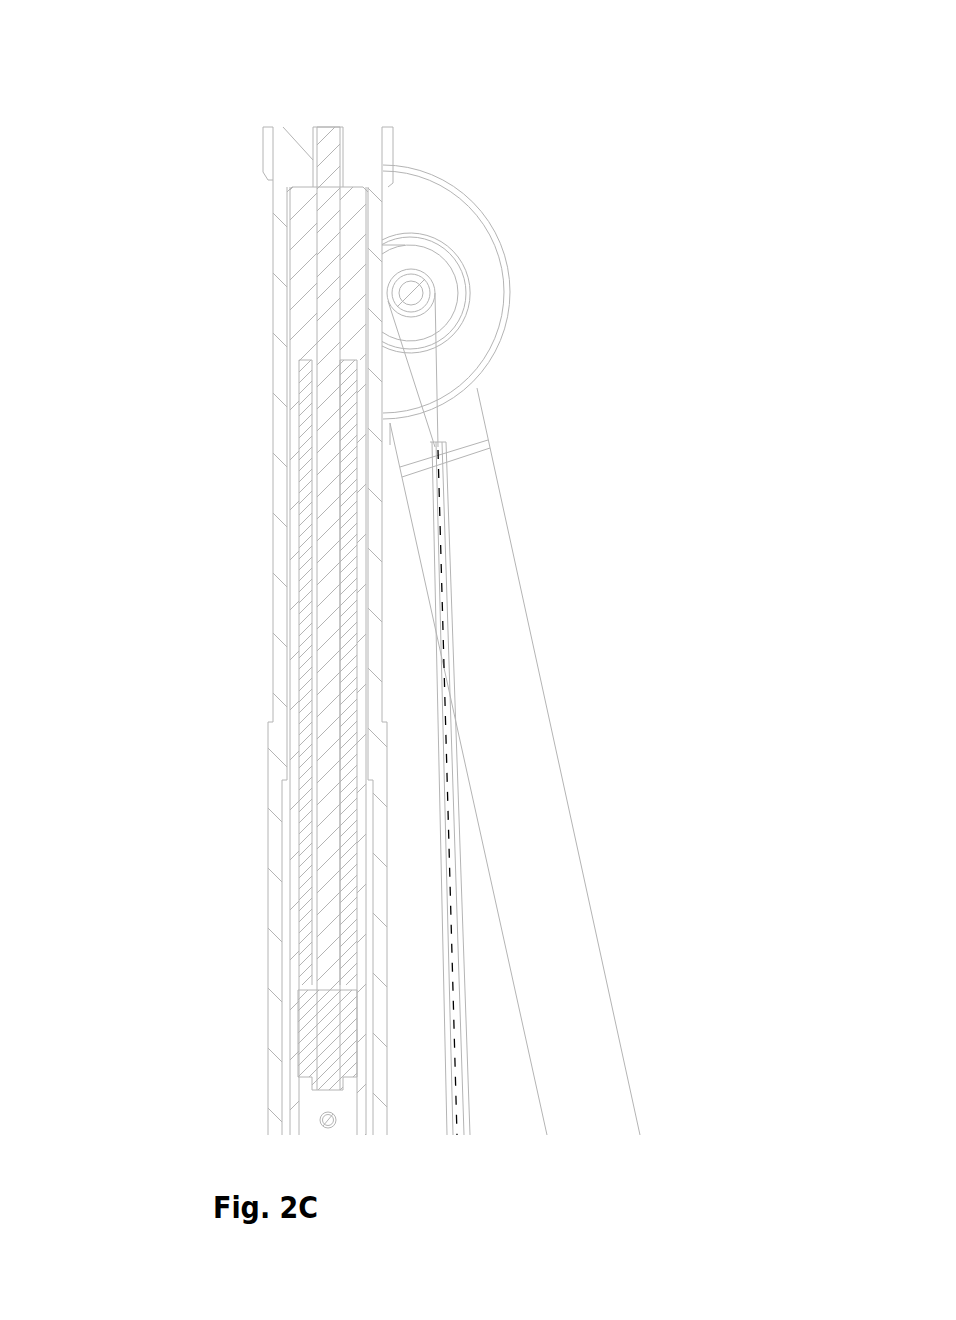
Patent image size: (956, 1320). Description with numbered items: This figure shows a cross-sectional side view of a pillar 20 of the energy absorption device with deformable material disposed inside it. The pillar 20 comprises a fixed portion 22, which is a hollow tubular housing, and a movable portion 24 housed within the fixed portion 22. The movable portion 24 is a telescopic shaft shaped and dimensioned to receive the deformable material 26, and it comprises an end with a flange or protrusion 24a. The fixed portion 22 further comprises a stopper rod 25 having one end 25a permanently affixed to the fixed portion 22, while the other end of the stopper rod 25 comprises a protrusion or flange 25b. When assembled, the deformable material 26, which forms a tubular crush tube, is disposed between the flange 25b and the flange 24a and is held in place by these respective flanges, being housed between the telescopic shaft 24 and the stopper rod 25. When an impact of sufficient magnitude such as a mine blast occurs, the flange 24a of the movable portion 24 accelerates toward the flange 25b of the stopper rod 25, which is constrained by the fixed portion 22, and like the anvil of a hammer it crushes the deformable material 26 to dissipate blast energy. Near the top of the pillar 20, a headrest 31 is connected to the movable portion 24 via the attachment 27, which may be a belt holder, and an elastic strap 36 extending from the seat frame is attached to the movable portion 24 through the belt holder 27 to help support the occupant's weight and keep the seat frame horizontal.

The pillar 20 is at (190, 152).
The fixed portion 22 is at (277, 337).
The movable portion 24 is at (285, 187).
The flange 24a is at (303, 248).
The stopper rod 25 is at (328, 920).
The end of stopper rod 25a is at (322, 123).
The flange 25b is at (330, 1028).
The deformable material 26 is at (312, 514).
The belt holder 27 is at (448, 292).
The headrest 31 is at (507, 303).
The elastic strap 36 is at (500, 570).